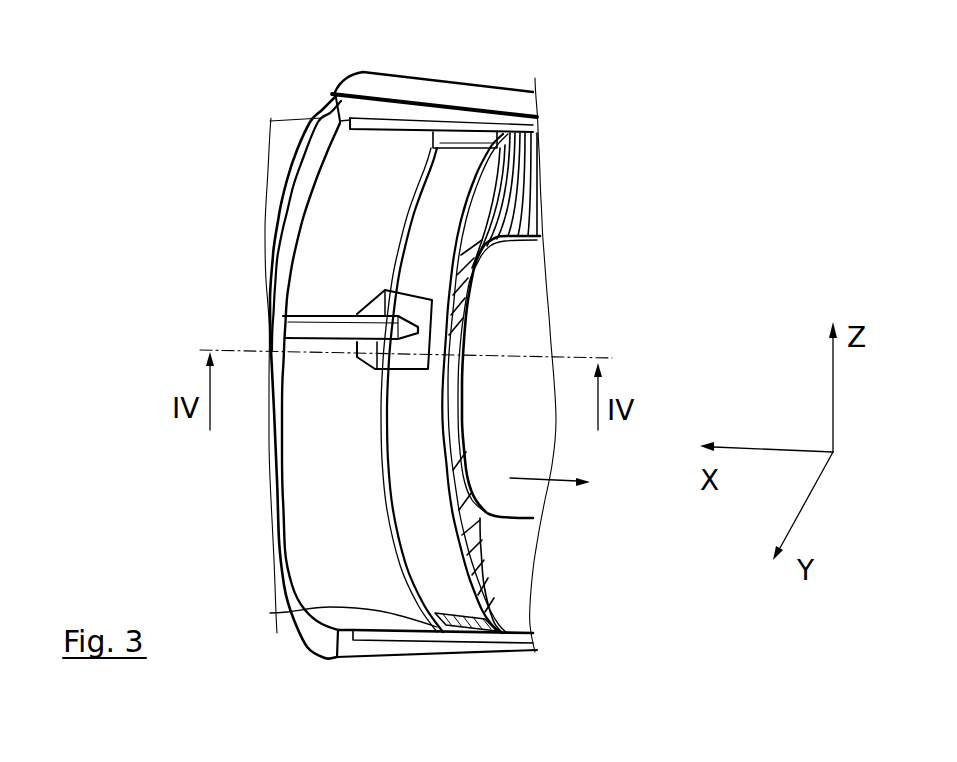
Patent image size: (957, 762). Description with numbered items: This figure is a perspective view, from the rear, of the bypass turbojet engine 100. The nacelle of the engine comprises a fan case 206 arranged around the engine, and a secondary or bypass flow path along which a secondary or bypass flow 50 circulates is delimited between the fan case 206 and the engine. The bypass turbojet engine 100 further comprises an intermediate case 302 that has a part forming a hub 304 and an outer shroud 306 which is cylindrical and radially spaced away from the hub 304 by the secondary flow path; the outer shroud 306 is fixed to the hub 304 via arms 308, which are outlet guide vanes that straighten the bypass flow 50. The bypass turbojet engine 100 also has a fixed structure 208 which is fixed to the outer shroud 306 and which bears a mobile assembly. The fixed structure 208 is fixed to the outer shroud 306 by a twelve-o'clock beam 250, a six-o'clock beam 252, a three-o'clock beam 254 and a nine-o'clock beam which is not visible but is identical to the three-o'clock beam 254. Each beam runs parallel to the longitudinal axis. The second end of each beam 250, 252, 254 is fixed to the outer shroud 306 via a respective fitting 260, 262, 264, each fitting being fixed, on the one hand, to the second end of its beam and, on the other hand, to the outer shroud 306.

The bypass turbojet engine 100 is at (676, 93).
The fan case 206 is at (277, 157).
The fixed structure 208 is at (320, 100).
The 12-o'clock beam 250 is at (471, 118).
The 6-o'clock beam 252 is at (413, 633).
The 3-o'clock beam 254 is at (317, 327).
The fitting 260 is at (497, 132).
The fitting 262 is at (463, 627).
The fitting 264 is at (407, 363).
The intermediate case 302 is at (612, 661).
The hub 304 is at (525, 300).
The outer shroud 306 is at (443, 215).
The arms 308 is at (522, 183).
The secondary or bypass flow 50 is at (551, 502).